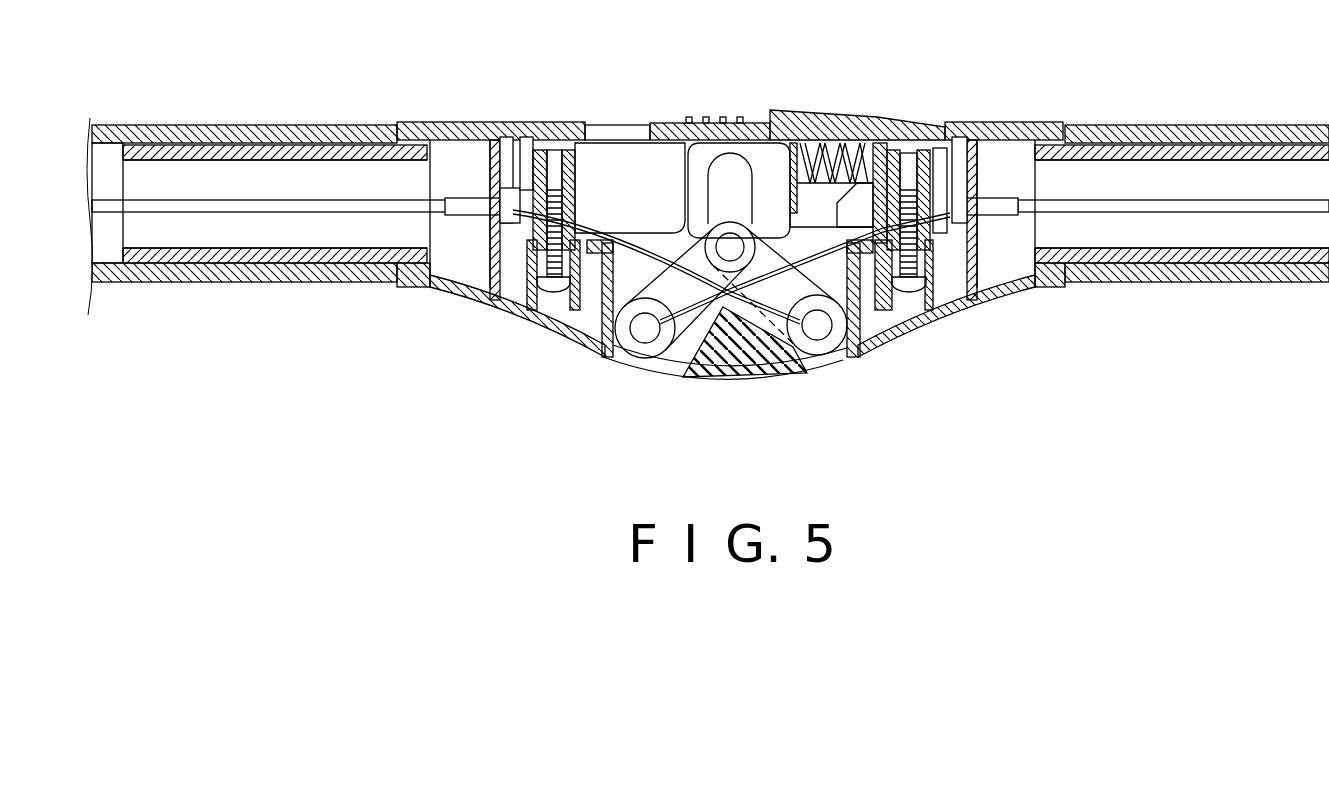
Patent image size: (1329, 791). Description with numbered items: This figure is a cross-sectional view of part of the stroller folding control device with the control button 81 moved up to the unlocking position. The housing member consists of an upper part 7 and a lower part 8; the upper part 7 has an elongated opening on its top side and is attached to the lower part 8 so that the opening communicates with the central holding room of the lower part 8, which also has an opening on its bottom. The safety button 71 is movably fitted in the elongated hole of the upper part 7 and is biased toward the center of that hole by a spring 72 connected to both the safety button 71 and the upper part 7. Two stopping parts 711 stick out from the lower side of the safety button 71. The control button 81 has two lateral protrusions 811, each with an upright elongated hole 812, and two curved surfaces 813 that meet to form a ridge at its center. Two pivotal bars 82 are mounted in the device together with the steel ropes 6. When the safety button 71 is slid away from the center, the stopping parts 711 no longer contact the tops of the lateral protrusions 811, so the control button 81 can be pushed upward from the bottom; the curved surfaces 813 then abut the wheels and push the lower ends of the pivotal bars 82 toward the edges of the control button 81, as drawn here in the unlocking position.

The steel rope 6 is at (325, 212).
The upper part 7 is at (565, 148).
The safety button 71 is at (755, 139).
The stopping part 711 is at (892, 150).
The spring 72 is at (848, 145).
The lower part 8 is at (717, 335).
The control button 81 is at (757, 367).
The lateral protrusion 811 is at (717, 150).
The upright elongated hole 812 is at (742, 185).
The curved surface 813 is at (700, 320).
The pivotal bar 82 is at (640, 150).